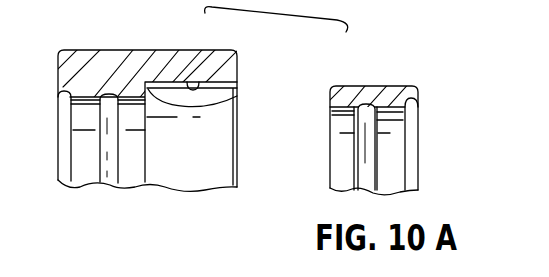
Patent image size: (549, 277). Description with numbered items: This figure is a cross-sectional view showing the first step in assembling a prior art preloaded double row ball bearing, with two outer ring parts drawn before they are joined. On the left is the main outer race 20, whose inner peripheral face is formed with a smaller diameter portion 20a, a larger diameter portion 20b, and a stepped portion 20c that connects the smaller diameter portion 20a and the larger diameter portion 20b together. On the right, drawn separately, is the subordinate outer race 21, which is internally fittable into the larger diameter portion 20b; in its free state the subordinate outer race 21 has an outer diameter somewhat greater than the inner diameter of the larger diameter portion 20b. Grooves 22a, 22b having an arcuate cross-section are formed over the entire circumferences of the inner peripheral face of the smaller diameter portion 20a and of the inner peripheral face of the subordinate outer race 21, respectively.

The main outer race 20 is at (137, 63).
The smaller diameter portion 20a is at (92, 97).
The larger diameter portion 20b is at (203, 89).
The stepped portion 20c is at (237, 98).
The subordinate outer race 21 is at (402, 88).
The groove 22a is at (108, 177).
The groove 22b is at (367, 104).